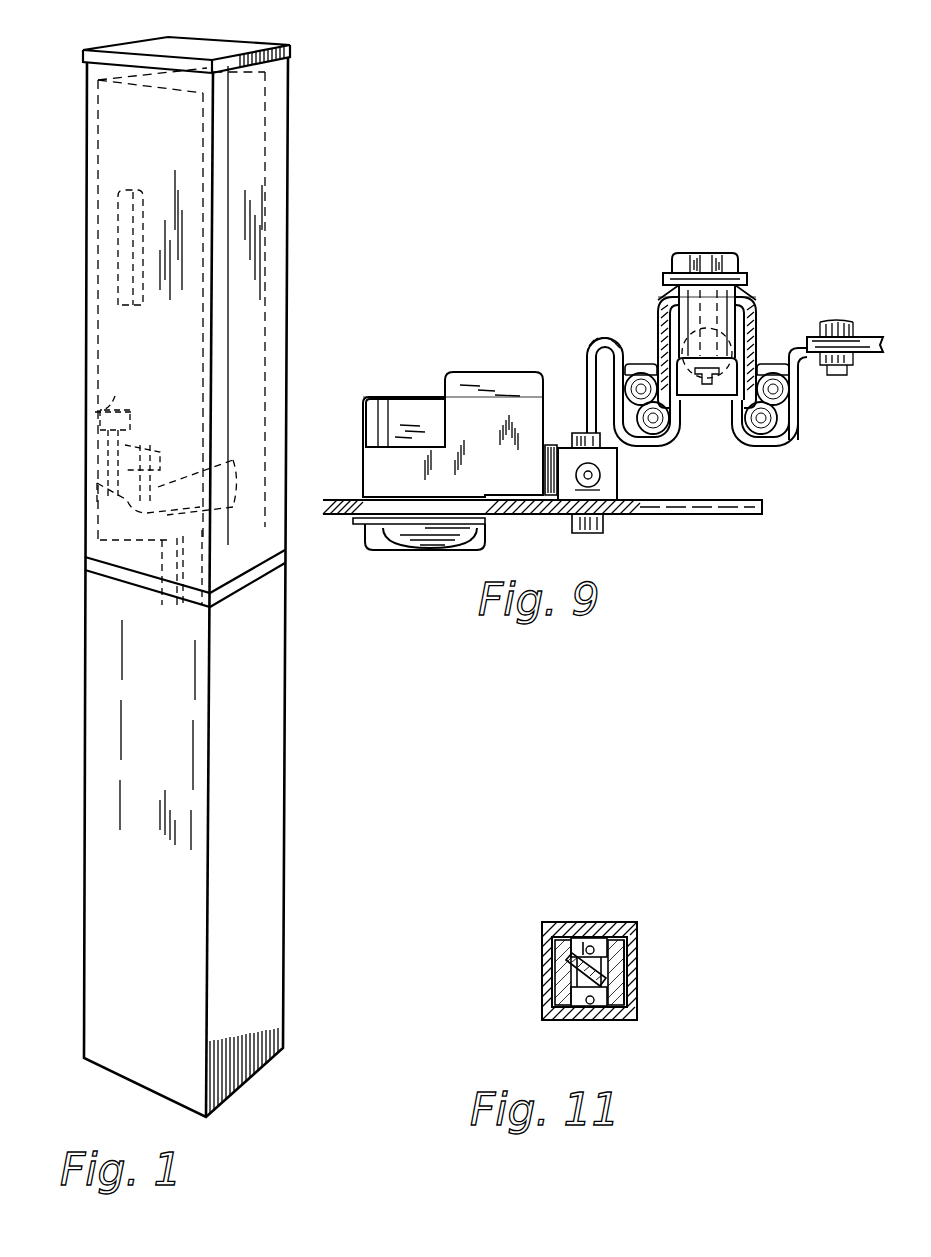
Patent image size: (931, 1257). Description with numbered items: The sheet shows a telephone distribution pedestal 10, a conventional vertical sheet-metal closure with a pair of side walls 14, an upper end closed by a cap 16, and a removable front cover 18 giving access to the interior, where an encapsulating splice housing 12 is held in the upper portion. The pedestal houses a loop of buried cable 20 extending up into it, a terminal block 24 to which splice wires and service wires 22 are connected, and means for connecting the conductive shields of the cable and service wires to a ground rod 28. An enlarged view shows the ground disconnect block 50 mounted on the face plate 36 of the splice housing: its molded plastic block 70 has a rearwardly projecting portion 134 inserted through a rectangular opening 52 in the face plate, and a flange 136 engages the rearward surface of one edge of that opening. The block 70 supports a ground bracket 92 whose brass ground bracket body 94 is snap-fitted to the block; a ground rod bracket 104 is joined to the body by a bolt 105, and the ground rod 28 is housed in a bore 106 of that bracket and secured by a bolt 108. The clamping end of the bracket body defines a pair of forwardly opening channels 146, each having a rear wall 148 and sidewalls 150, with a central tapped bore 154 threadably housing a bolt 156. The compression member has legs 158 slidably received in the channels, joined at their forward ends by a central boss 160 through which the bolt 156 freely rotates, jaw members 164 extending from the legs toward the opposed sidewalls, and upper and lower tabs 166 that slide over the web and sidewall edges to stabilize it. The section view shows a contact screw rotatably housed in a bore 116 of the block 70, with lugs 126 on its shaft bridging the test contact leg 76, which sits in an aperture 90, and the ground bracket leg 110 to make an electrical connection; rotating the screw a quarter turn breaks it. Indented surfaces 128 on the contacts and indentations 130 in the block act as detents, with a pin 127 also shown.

In FIG. 1, the telephone distribution pedestal 10 is at (304, 163).
In FIG. 1, the encapsulating splice housing 12 is at (243, 212).
In FIG. 1, the side walls 14 is at (262, 627).
In FIG. 1, the cap 16 is at (182, 46).
In FIG. 1, the front cover 18 is at (108, 131).
In FIG. 1, the loop of buried cable 20 is at (100, 540).
In FIG. 1, the service wires 22 is at (205, 460).
In FIG. 1, the terminal block 24 is at (120, 228).
In FIG. 1, the ground rod 28 is at (118, 497).
In FIG. 9, the ground rod 28 is at (600, 478).
In FIG. 9, the face plate 36 is at (727, 504).
In FIG. 1, the ground disconnect block 50 is at (117, 396).
In FIG. 9, the ground disconnect block 50 is at (453, 358).
In FIG. 9, the rectangular opening 52 is at (378, 500).
In FIG. 9, the molded plastic block 70 is at (505, 408).
In FIG. 11, the molded plastic block 70 is at (560, 1020).
In FIG. 11, the leg of test contact 76 is at (578, 988).
In FIG. 9, the aperture 90 is at (745, 300).
In FIG. 9, the ground bracket 92 is at (620, 302).
In FIG. 9, the ground bracket body 94 is at (590, 362).
In FIG. 9, the ground rod bracket 104 is at (612, 457).
In FIG. 9, the bolt 105 is at (588, 533).
In FIG. 9, the bore 106 is at (583, 473).
In FIG. 9, the bolt 108 is at (582, 432).
In FIG. 11, the leg of ground bracket body 110 is at (627, 988).
In FIG. 11, the bore 116 is at (574, 999).
In FIG. 11, the lugs 126 is at (565, 970).
In FIG. 11, the pin 127 is at (583, 940).
In FIG. 11, the indented surface 128 is at (560, 945).
In FIG. 11, the indentations 130 is at (592, 945).
In FIG. 9, the rearwardly projecting portion 134 is at (470, 518).
In FIG. 9, the flange 136 is at (368, 522).
In FIG. 9, the forwardly opening channels 146 is at (748, 406).
In FIG. 9, the rear wall 148 is at (750, 440).
In FIG. 9, the sidewalls 150 is at (590, 380).
In FIG. 9, the central tapped bore 154 is at (660, 340).
In FIG. 9, the bolt 156 is at (704, 253).
In FIG. 9, the legs of compression member 158 is at (655, 308).
In FIG. 9, the central boss 160 is at (660, 300).
In FIG. 9, the jaw members 164 is at (646, 355).
In FIG. 9, the tabs 166 is at (730, 313).